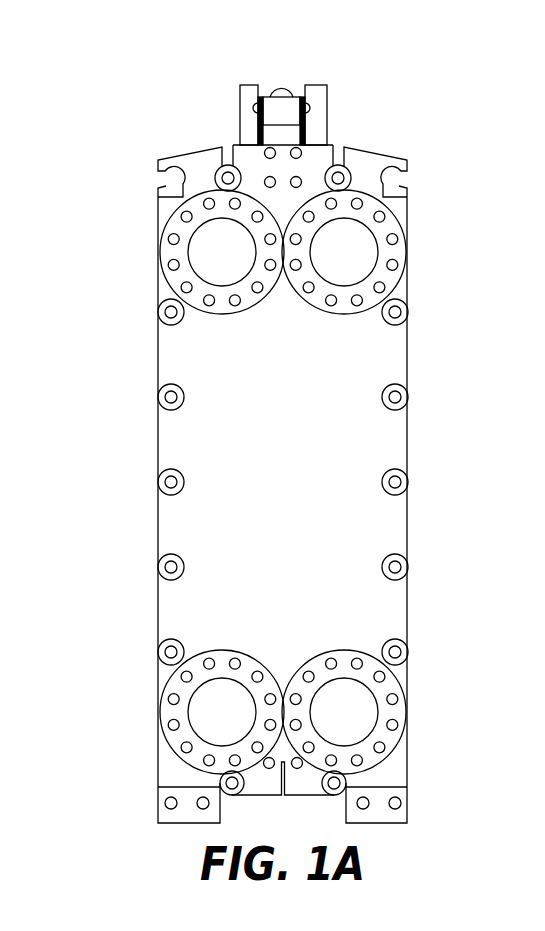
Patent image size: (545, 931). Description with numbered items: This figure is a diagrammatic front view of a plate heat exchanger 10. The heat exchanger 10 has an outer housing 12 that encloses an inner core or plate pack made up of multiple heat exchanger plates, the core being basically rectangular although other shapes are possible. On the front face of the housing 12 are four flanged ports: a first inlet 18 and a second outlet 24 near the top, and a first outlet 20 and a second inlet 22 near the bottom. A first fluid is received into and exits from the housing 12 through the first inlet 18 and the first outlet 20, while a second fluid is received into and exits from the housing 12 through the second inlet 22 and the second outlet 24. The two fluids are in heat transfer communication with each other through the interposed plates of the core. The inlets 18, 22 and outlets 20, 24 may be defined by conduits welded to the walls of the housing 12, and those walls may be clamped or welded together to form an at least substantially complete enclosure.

The heat exchanger 10 is at (403, 86).
The outer housing 12 is at (365, 445).
The first inlet 18 is at (212, 245).
The first outlet 20 is at (214, 710).
The second inlet 22 is at (352, 713).
The second outlet 24 is at (357, 245).